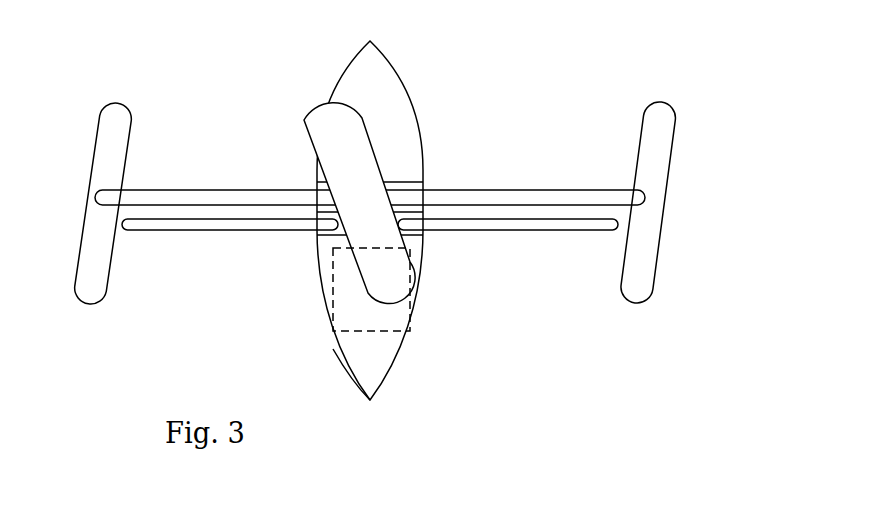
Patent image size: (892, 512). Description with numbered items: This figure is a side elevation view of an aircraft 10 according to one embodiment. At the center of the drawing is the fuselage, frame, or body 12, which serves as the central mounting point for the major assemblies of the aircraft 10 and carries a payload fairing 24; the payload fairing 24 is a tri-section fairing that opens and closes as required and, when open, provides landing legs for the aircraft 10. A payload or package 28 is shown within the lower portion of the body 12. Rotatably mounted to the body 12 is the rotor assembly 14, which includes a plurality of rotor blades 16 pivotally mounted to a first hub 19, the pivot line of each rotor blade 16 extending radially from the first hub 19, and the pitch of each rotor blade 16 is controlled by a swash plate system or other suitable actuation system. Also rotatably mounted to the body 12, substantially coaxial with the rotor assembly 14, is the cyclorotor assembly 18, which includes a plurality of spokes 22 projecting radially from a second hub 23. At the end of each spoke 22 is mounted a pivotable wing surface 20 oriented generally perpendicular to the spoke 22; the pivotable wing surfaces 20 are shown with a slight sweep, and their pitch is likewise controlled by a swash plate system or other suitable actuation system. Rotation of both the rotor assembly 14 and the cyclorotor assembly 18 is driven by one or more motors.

The aircraft 10 is at (498, 65).
The body 12 is at (400, 72).
The rotor assembly 14 is at (553, 254).
The rotor blade 16 is at (166, 232).
The cyclorotor assembly 18 is at (613, 106).
The first hub 19 is at (338, 232).
The pivotable wing surface 20 is at (315, 102).
The spoke 22 is at (162, 190).
The second hub 23 is at (410, 198).
The payload fairing 24 is at (333, 349).
The payload or package 28 is at (382, 332).